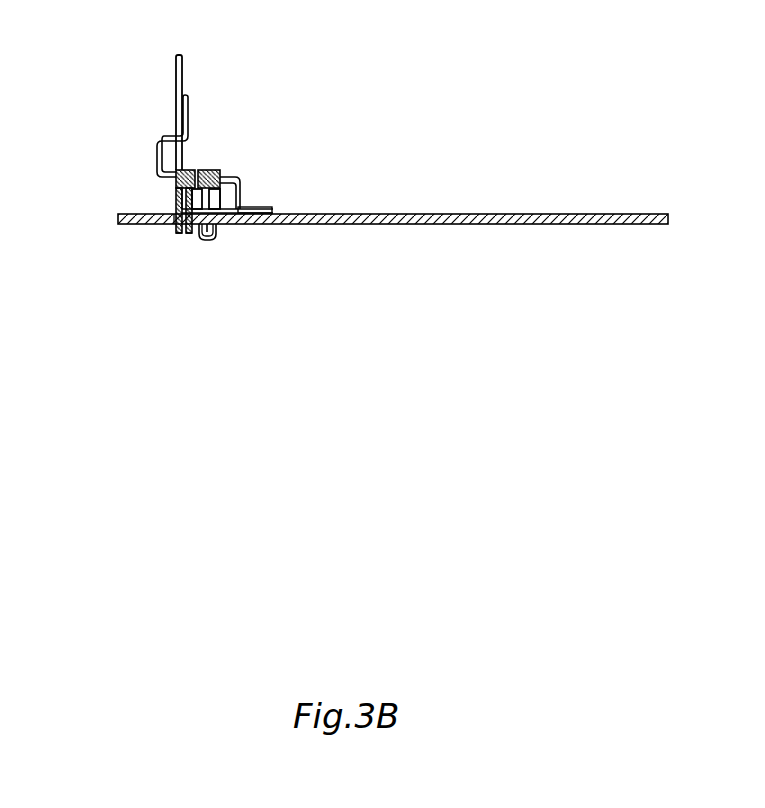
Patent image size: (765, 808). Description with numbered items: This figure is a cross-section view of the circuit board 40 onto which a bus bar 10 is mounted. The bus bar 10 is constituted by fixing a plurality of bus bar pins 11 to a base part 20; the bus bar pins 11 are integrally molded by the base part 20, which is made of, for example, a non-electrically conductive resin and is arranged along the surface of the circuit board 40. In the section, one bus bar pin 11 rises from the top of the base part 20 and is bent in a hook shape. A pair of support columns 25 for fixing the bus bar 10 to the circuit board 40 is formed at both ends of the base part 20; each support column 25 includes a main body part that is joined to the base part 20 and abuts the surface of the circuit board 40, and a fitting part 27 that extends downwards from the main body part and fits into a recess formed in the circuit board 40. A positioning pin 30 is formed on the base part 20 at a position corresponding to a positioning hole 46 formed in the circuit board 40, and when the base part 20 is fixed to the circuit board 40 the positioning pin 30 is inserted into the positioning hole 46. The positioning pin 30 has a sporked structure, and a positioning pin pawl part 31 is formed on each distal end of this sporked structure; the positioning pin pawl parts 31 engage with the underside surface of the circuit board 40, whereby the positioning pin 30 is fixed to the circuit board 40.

The bus bar 10 is at (156, 136).
The bus bar pin 11 is at (179, 58).
The base part 20 is at (200, 170).
The support column 25 is at (226, 172).
The fitting part 27 is at (217, 232).
The positioning pin 30 is at (176, 200).
The positioning pin pawl part 31 is at (177, 233).
The circuit board 40 is at (598, 215).
The positioning hole 46 is at (175, 222).